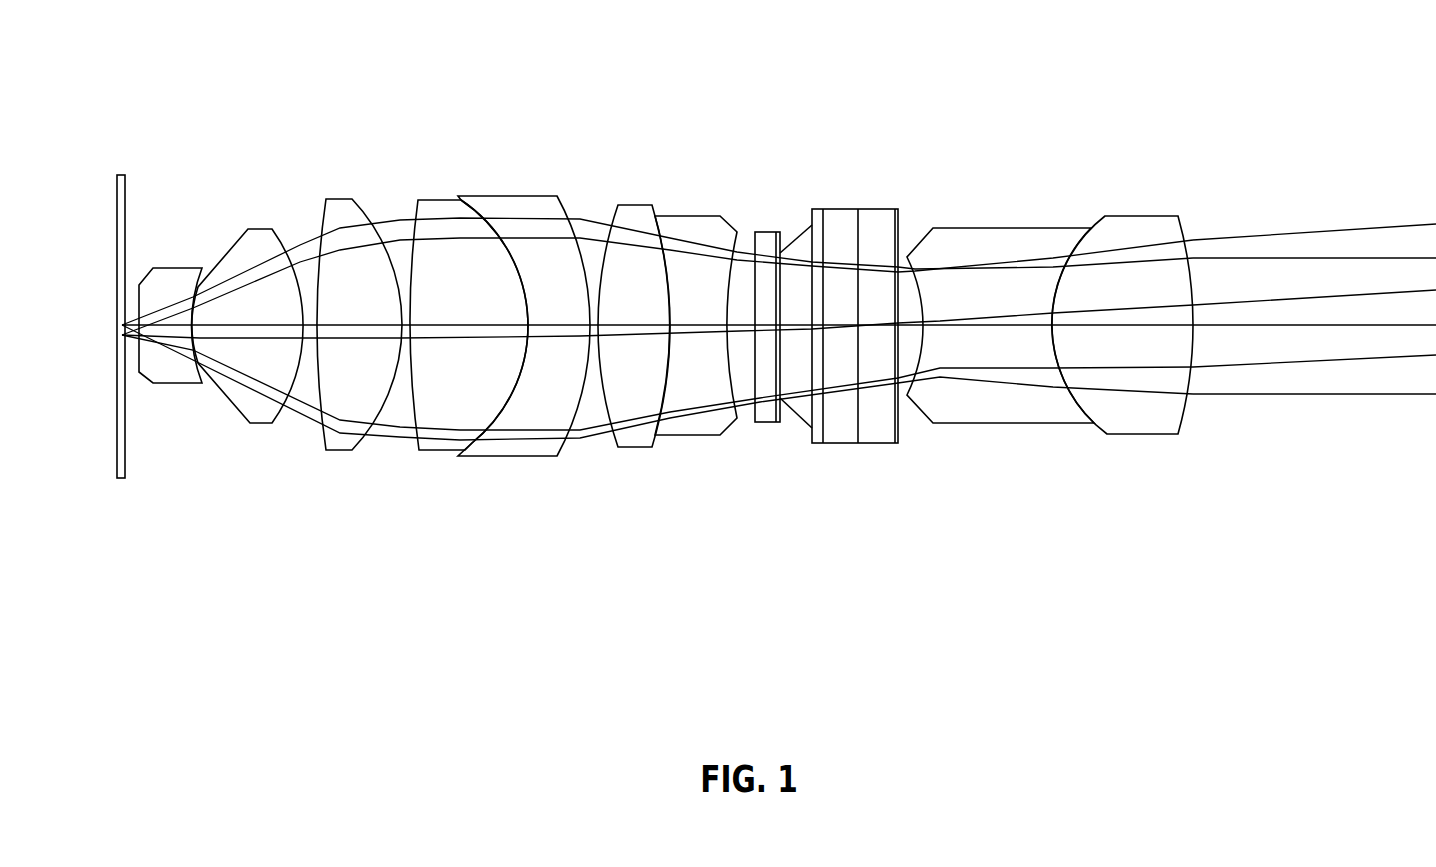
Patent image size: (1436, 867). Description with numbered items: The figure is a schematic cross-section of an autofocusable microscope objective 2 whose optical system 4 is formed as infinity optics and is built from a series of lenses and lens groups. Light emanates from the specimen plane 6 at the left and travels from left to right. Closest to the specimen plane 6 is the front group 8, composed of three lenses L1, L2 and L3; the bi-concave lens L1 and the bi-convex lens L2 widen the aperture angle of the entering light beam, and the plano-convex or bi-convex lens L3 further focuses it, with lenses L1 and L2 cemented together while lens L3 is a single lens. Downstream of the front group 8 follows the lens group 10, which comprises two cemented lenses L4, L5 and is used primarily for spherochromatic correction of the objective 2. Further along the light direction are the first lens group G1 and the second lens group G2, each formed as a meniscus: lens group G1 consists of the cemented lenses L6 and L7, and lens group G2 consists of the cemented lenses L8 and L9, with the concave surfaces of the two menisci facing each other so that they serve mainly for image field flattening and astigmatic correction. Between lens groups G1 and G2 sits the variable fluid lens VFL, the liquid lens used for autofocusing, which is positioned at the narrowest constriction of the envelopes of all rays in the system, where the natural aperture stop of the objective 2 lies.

The microscope objective 2 is at (580, 123).
The optical system 4 is at (1278, 528).
The specimen plane 6 is at (118, 305).
The front group 8 is at (367, 192).
The lens group 10 is at (558, 182).
The first lens group G1 is at (735, 191).
The variable fluid lens VFL is at (897, 192).
The second lens group G2 is at (1177, 200).
The bi-concave lens L1 is at (179, 432).
The bi-convex lens L2 is at (253, 447).
The plano-convex or bi-convex lens L3 is at (337, 477).
The cemented lens L4 is at (434, 473).
The cemented lens L5 is at (507, 478).
The cemented lens L6 is at (635, 470).
The cemented lens L7 is at (697, 457).
The cemented lens L8 is at (1003, 445).
The cemented lens L9 is at (1140, 457).